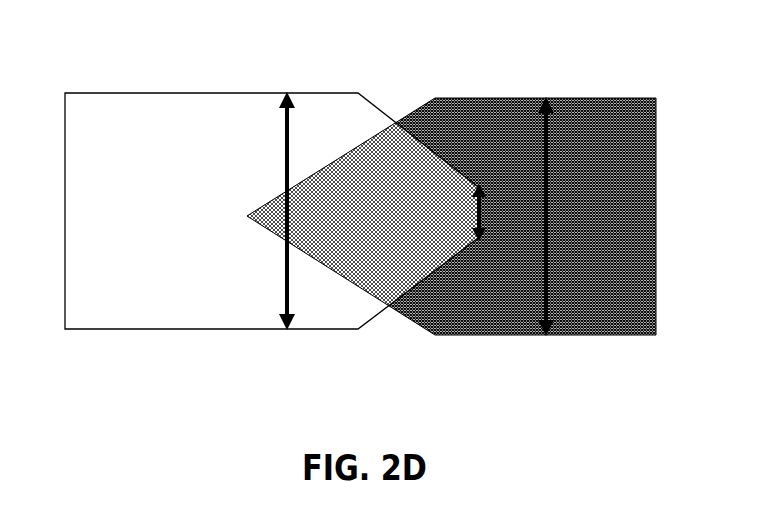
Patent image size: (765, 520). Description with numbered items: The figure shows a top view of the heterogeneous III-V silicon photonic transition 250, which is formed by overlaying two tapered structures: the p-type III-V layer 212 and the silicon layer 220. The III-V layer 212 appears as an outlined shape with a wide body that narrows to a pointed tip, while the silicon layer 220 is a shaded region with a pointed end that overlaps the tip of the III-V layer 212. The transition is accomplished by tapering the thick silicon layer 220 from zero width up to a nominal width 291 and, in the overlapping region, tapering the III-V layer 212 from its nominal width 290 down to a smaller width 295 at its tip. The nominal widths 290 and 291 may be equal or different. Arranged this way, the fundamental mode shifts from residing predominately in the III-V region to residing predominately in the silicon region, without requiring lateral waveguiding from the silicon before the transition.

The p-type III-V layer 212 is at (271, 211).
The silicon layer 220 is at (451, 216).
The heterogeneous III-V silicon photonic transition 250 is at (176, 378).
The width 290 is at (288, 280).
The width 291 is at (598, 336).
The width 295 is at (476, 189).